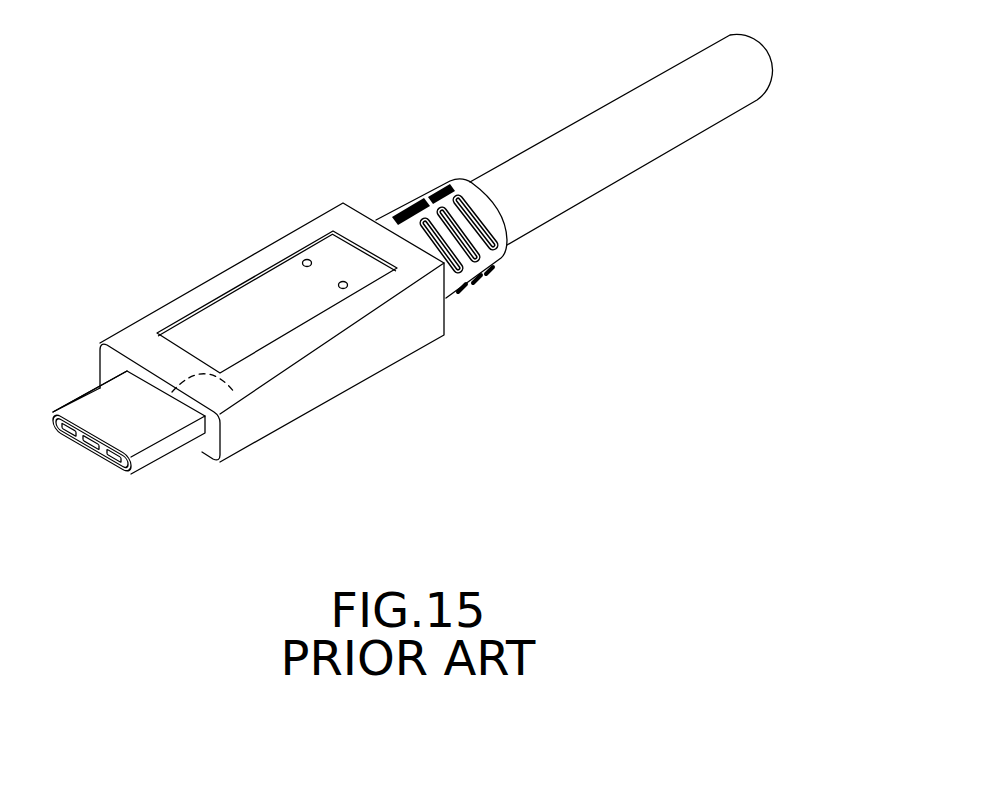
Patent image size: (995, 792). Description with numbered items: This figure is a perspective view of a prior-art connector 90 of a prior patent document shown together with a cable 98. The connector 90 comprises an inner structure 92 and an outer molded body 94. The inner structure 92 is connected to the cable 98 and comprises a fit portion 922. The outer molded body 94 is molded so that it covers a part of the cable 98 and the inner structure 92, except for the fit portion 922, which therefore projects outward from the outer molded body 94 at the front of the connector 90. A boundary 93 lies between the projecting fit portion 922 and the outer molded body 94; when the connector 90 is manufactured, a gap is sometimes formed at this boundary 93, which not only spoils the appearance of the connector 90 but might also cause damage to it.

The connector 90 is at (280, 351).
The inner structure 92 is at (168, 445).
The fit portion 922 is at (178, 447).
The boundary 93 is at (235, 393).
The outer molded body 94 is at (350, 360).
The cable 98 is at (575, 110).